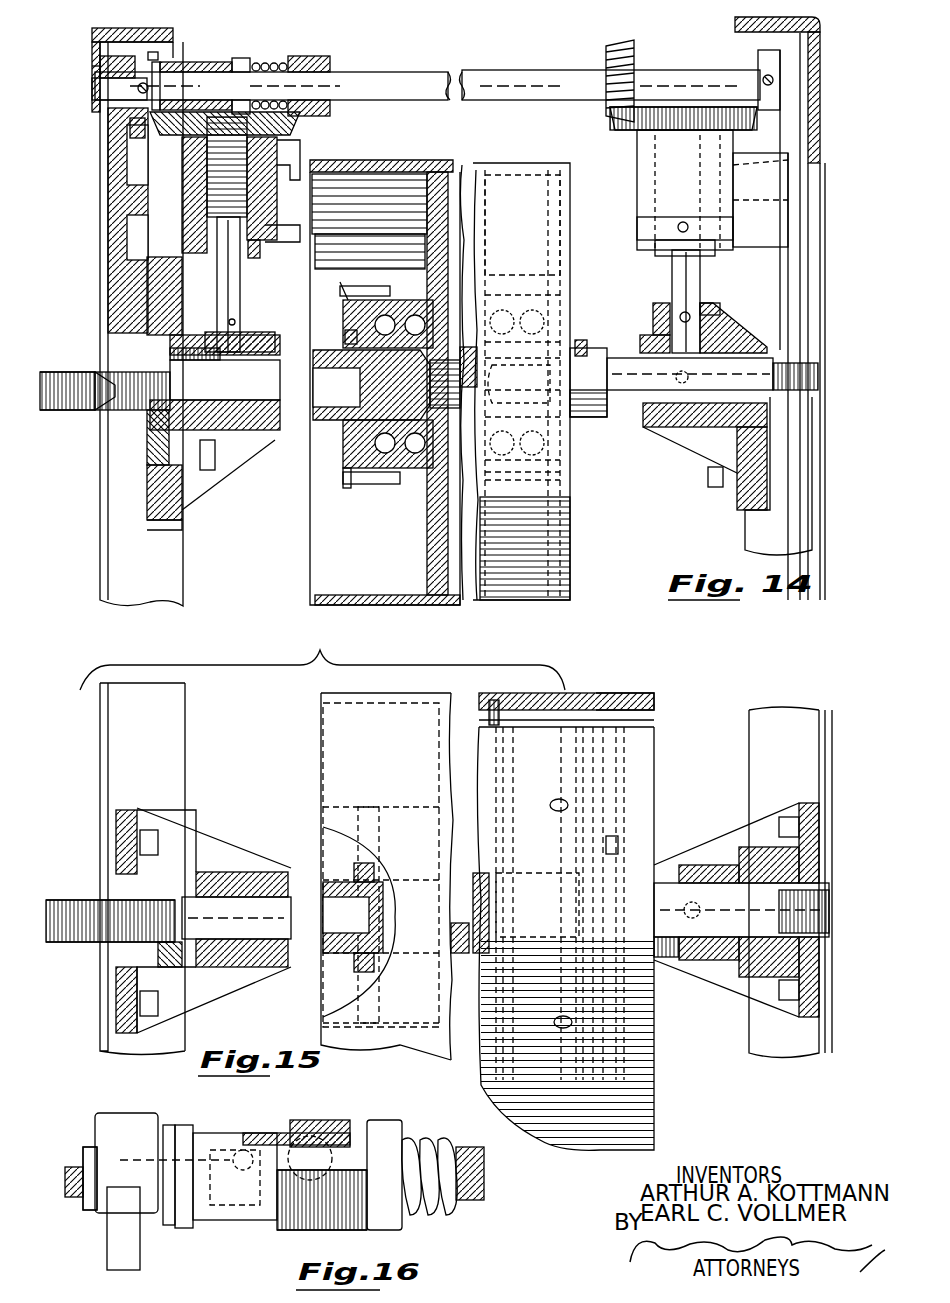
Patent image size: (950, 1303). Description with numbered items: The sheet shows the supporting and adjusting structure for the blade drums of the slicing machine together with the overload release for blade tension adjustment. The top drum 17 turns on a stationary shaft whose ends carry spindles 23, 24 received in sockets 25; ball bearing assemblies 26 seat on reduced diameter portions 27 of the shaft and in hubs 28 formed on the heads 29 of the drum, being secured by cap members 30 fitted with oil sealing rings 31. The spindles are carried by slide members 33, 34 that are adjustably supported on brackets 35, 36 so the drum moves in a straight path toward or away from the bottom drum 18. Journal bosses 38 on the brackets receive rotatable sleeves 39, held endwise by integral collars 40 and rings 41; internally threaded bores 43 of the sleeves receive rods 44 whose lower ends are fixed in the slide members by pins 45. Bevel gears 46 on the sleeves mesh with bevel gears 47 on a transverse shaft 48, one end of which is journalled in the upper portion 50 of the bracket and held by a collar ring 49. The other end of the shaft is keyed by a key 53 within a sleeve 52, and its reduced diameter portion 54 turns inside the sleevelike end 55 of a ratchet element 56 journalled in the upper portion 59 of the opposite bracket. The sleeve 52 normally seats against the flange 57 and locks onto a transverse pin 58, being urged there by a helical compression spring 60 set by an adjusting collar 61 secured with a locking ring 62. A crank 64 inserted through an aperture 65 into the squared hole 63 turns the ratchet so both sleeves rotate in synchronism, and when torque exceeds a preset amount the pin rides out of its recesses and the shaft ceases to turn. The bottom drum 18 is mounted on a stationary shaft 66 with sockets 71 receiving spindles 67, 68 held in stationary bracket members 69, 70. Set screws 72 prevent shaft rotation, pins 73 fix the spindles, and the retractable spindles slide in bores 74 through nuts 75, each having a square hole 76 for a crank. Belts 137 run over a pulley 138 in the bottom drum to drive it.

In FIG. 14, the top drum 17 is at (412, 165).
In FIG. 15, the bottom drum 18 is at (321, 705).
In FIG. 14, the spindle 23 is at (280, 410).
In FIG. 14, the spindle 24 is at (628, 415).
In FIG. 14, the socket 25 is at (336, 387).
In FIG. 14, the ball bearing assembly 26 is at (398, 280).
In FIG. 14, the reduced diameter portion 27 is at (431, 383).
In FIG. 14, the hub 28 is at (418, 262).
In FIG. 14, the head 29 is at (440, 555).
In FIG. 14, the cap member 30 is at (348, 478).
In FIG. 14, the oil sealing ring 31 is at (343, 335).
In FIG. 15, the oil sealing ring 31 is at (323, 872).
In FIG. 14, the slide member 33 is at (170, 525).
In FIG. 14, the slide member 34 is at (740, 508).
In FIG. 14, the bracket 35 is at (112, 280).
In FIG. 16, the bracket 35 is at (107, 1262).
In FIG. 14, the bracket 36 is at (800, 460).
In FIG. 14, the journal boss 38 is at (285, 156).
In FIG. 14, the sleeve 39 is at (258, 258).
In FIG. 14, the collar 40 is at (292, 135).
In FIG. 14, the ring 41 is at (268, 236).
In FIG. 14, the internally threaded bore 43 is at (212, 152).
In FIG. 14, the rod 44 is at (242, 290).
In FIG. 14, the pin 45 is at (680, 317).
In FIG. 14, the bevel gear 46 is at (128, 128).
In FIG. 14, the bevel gear 47 is at (320, 58).
In FIG. 14, the shaft 48 is at (410, 72).
In FIG. 16, the shaft 48 is at (474, 1147).
In FIG. 14, the collar ring 49 is at (758, 56).
In FIG. 14, the upper portion of bracket 50 is at (814, 40).
In FIG. 14, the sleeve 52 is at (190, 62).
In FIG. 16, the sleeve 52 is at (230, 1222).
In FIG. 16, the key 53 is at (322, 1120).
In FIG. 16, the reduced diameter portion 54 is at (236, 1133).
In FIG. 16, the sleevelike end 55 is at (262, 1133).
In FIG. 14, the ratchet element 56 is at (92, 79).
In FIG. 16, the ratchet element 56 is at (88, 1150).
In FIG. 16, the flange 57 is at (168, 1228).
In FIG. 14, the transverse pin 58 is at (165, 72).
In FIG. 16, the transverse pin 58 is at (188, 1230).
In FIG. 14, the upper portion of bracket 59 is at (112, 58).
In FIG. 16, the upper portion of bracket 59 is at (118, 1113).
In FIG. 14, the helical compression spring 60 is at (280, 60).
In FIG. 16, the helical compression spring 60 is at (452, 1212).
In FIG. 14, the adjusting collar 61 is at (243, 58).
In FIG. 16, the adjusting collar 61 is at (385, 1120).
In FIG. 14, the locking ring 62 is at (236, 50).
In FIG. 16, the locking ring 62 is at (300, 1228).
In FIG. 14, the squared hole 63 is at (100, 97).
In FIG. 16, the crank 64 is at (80, 1195).
In FIG. 14, the aperture 65 is at (92, 68).
In FIG. 15, the stationary shaft 66 is at (459, 873).
In FIG. 15, the spindle 67 is at (258, 894).
In FIG. 15, the spindle 68 is at (709, 933).
In FIG. 15, the stationary bracket member 69 is at (200, 852).
In FIG. 15, the stationary bracket member 70 is at (747, 823).
In FIG. 15, the socket 71 is at (318, 948).
In FIG. 14, the set screw 72 is at (586, 348).
In FIG. 15, the set screw 72 is at (632, 840).
In FIG. 14, the pin 73 is at (690, 377).
In FIG. 15, the pin 73 is at (694, 877).
In FIG. 14, the bore 74 is at (240, 430).
In FIG. 15, the bore 74 is at (258, 962).
In FIG. 14, the nut 75 is at (150, 420).
In FIG. 15, the nut 75 is at (160, 950).
In FIG. 14, the square hole 76 is at (50, 380).
In FIG. 15, the square hole 76 is at (46, 912).
In FIG. 15, the belt 137 is at (618, 693).
In FIG. 15, the pulley 138 is at (650, 712).